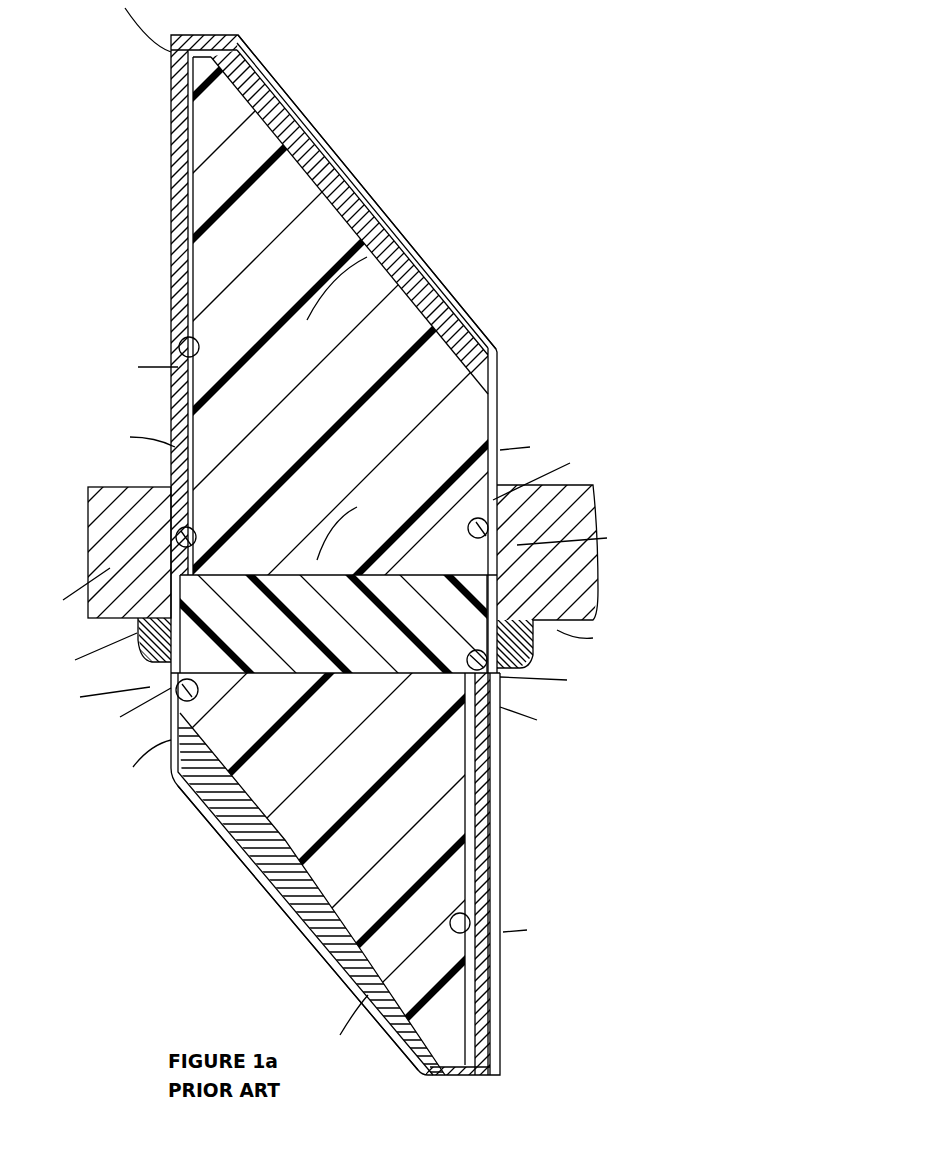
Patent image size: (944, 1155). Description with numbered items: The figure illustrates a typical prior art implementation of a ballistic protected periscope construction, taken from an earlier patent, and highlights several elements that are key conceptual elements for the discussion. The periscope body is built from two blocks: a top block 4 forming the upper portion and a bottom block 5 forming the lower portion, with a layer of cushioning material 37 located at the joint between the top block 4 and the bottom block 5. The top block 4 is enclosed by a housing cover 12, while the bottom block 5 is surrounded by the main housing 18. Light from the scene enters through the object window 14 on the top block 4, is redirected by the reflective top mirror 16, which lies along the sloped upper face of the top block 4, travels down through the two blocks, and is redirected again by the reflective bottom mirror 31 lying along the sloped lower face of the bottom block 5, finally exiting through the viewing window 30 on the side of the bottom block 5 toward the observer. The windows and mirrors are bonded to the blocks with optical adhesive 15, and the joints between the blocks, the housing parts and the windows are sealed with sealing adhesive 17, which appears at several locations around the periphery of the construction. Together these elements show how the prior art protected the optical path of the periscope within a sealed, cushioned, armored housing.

The top block 4 is at (449, 424).
The bottom block 5 is at (440, 847).
The housing cover 12 is at (407, 238).
The object window 14 is at (171, 100).
The optical adhesive 15 is at (188, 178).
The reflective top mirror 16 is at (333, 162).
The sealing adhesive 17 is at (300, 124).
The main housing 18 is at (243, 858).
The viewing window 30 is at (483, 978).
The reflective bottom mirror 31 is at (200, 795).
The cushioning material 37 is at (361, 639).